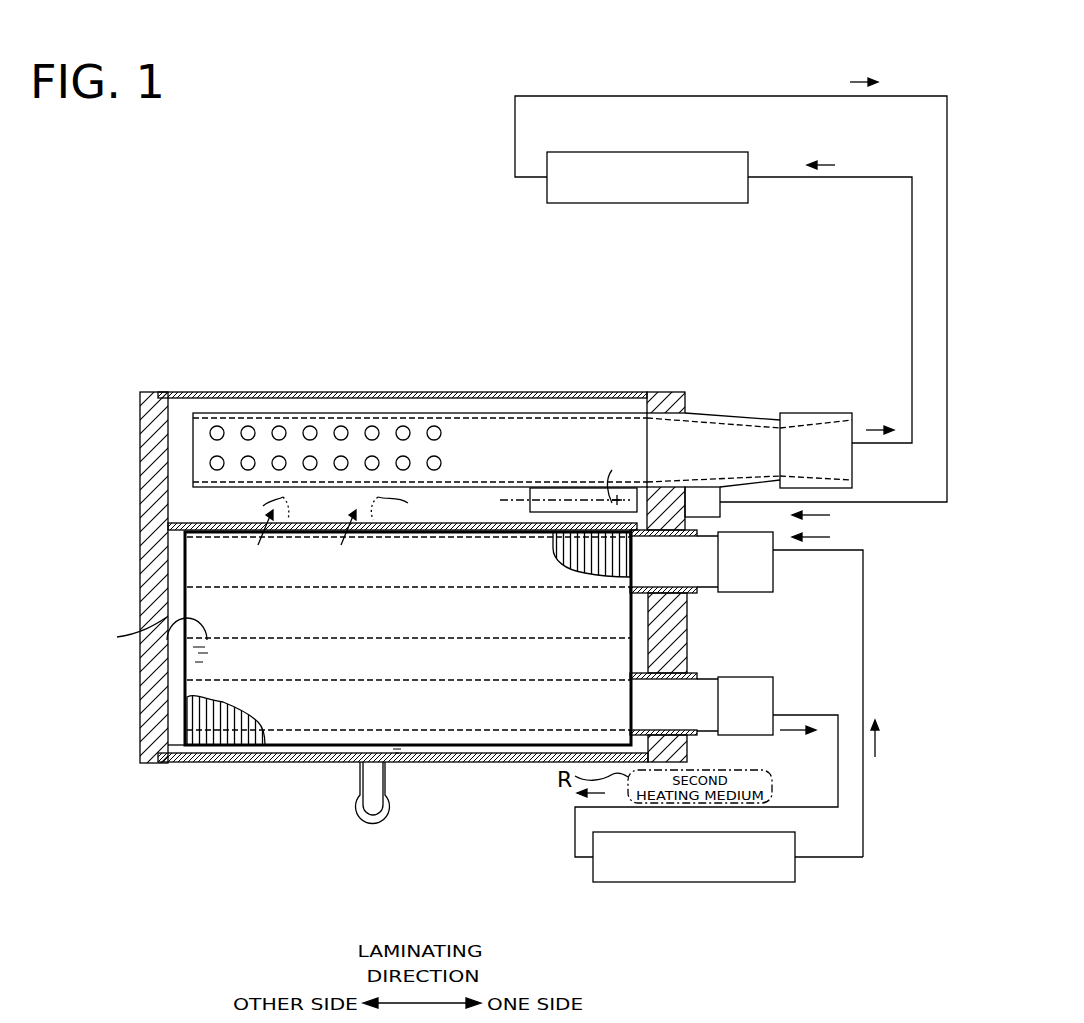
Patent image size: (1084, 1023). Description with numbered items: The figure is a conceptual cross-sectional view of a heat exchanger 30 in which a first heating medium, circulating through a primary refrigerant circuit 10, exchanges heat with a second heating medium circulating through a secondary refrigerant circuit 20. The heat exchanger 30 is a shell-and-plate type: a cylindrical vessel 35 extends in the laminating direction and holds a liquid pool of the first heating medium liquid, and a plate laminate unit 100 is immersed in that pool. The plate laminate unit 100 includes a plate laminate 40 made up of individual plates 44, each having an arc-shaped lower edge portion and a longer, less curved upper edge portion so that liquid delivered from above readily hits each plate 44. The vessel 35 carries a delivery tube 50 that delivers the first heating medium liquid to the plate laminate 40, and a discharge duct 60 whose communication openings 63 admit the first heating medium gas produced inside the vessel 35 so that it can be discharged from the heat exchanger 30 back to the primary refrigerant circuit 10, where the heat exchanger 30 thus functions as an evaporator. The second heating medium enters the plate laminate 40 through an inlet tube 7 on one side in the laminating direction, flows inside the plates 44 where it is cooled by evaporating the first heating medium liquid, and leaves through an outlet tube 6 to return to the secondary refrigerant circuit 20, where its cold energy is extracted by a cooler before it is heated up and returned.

The primary refrigerant circuit 10 is at (736, 151).
The secondary refrigerant circuit 20 is at (632, 883).
The heat exchanger 30 is at (505, 407).
The vessel 35 is at (444, 382).
The plate laminate 40 is at (196, 520).
The plate laminate unit 100 is at (450, 559).
The plate 44 is at (578, 560).
The delivery tube 50 is at (522, 487).
The discharge duct 60 is at (184, 457).
The communication openings 63 is at (283, 431).
The inlet tube 7 is at (745, 593).
The outlet tube 6 is at (745, 736).